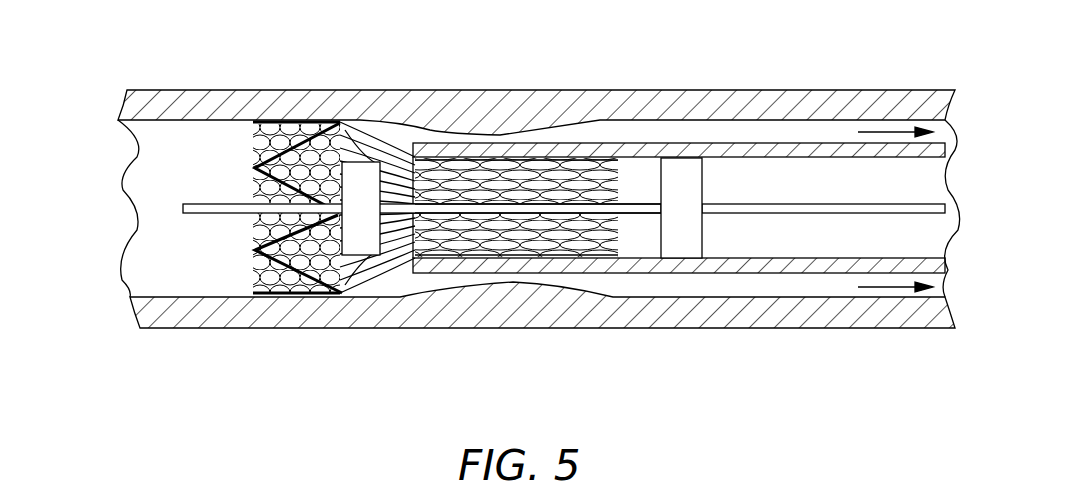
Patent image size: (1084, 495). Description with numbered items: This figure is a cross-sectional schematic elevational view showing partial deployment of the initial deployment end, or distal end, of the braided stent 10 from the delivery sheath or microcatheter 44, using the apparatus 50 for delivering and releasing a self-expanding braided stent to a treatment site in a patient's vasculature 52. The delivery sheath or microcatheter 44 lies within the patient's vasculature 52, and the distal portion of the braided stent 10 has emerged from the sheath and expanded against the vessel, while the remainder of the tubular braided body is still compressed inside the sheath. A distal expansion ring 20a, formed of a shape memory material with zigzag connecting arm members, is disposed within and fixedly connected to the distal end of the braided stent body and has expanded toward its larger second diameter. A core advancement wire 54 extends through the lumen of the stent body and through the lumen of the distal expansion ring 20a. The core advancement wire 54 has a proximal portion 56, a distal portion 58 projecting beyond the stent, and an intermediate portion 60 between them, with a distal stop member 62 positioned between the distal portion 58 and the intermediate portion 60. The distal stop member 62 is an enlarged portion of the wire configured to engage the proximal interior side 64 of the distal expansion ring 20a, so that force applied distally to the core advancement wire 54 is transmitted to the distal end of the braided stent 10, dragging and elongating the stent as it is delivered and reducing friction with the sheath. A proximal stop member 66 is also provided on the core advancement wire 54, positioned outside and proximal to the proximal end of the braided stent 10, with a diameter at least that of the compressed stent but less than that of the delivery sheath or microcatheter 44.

The braided stent 10 is at (198, 167).
The distal expansion ring 20a is at (282, 121).
The delivery sheath or microcatheter 44 is at (752, 143).
The apparatus 50 is at (623, 118).
The patient's vasculature 52 is at (495, 90).
The core advancement wire 54 is at (831, 210).
The proximal portion 56 is at (638, 209).
The distal portion 58 is at (217, 209).
The intermediate portion 60 is at (457, 207).
The distal stop member 62 is at (360, 187).
The proximal interior side 64 is at (362, 125).
The proximal stop member 66 is at (680, 240).